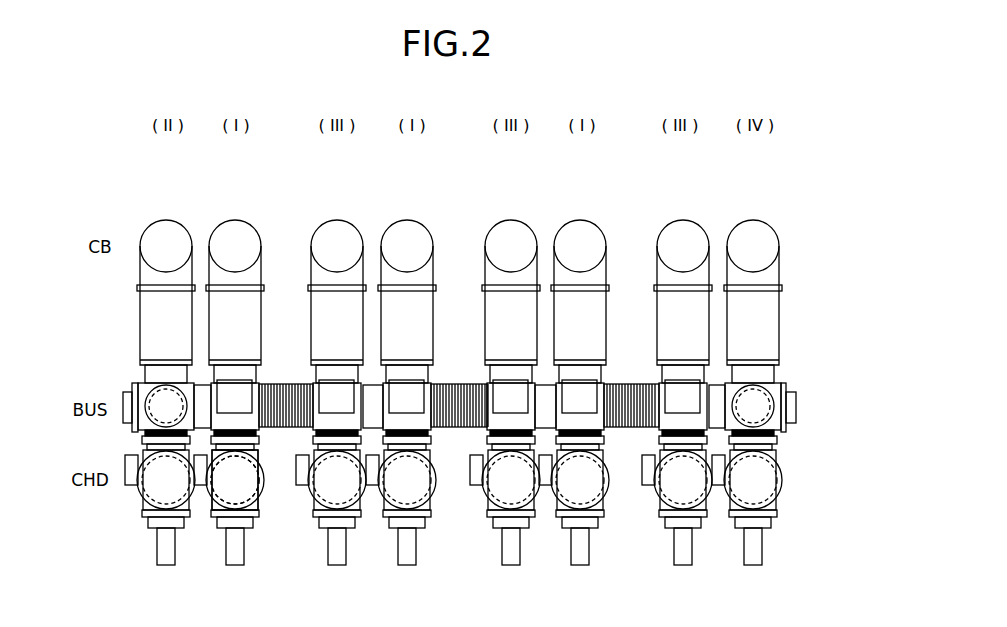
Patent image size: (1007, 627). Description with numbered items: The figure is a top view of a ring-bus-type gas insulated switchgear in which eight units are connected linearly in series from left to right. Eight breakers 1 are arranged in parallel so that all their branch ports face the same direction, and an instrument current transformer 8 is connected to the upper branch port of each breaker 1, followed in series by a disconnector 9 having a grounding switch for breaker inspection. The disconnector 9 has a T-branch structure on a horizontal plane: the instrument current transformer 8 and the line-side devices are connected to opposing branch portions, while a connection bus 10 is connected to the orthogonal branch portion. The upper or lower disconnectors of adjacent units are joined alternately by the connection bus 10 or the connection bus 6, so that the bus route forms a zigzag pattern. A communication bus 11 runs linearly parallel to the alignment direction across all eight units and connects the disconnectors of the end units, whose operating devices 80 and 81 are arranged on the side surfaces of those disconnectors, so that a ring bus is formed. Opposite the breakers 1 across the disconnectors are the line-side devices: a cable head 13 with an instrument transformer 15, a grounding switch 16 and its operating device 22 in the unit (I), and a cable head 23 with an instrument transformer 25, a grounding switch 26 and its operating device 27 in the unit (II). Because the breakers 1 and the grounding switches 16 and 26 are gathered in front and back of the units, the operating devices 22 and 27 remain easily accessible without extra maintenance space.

The breaker 1 is at (143, 238).
The instrument current transformer 8 is at (154, 330).
The connection bus 10 is at (283, 383).
The communication bus 11 is at (143, 386).
The disconnector 9 is at (305, 433).
The connection bus 6 is at (373, 413).
The operating device 80 is at (122, 417).
The operating device 81 is at (796, 405).
The instrument transformer 25 is at (135, 491).
The cable head 23 is at (140, 504).
The instrument transformer 15 is at (270, 488).
The cable head 13 is at (263, 488).
The grounding switch 26 is at (148, 529).
The operating device 27 is at (167, 566).
The grounding switch 16 is at (213, 518).
The operating device 22 is at (236, 566).